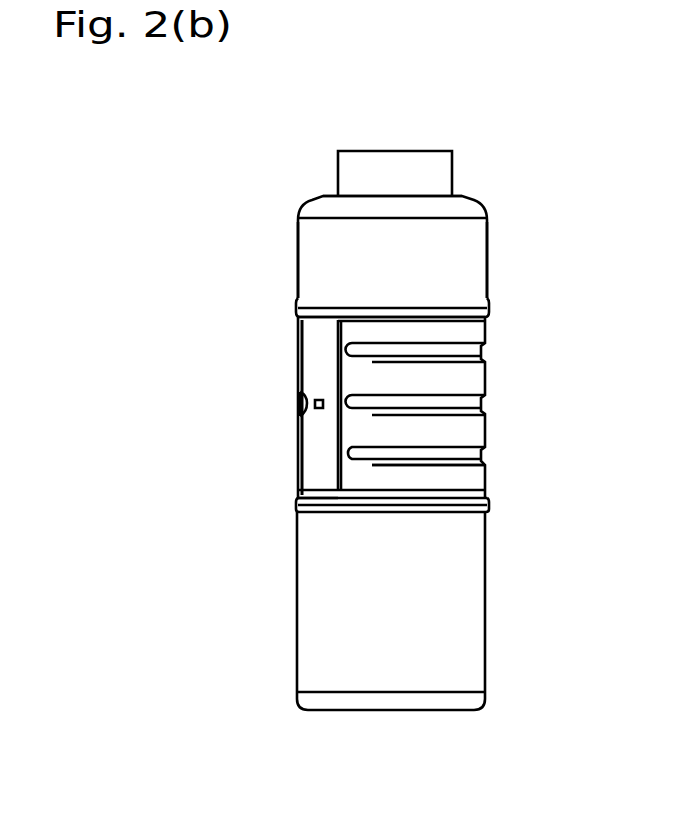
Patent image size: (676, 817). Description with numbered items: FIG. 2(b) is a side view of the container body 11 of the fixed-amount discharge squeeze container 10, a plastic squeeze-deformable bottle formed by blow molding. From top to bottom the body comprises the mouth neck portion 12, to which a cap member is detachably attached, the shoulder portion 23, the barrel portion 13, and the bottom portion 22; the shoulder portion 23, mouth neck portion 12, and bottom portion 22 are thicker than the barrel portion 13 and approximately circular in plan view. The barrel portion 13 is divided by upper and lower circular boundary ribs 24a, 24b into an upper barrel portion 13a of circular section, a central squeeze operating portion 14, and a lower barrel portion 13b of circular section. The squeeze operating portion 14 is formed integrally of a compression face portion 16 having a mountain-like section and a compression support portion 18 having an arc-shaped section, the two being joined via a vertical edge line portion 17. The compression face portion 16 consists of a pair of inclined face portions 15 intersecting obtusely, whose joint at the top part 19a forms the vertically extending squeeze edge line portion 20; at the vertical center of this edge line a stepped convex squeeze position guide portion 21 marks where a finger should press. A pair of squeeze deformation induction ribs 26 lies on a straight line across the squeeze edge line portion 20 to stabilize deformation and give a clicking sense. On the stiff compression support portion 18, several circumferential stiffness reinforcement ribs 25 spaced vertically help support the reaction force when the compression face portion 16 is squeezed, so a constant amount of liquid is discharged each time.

The fixed-amount discharge squeeze container 10 is at (286, 207).
The container body 11 is at (481, 198).
The mouth neck portion 12 is at (420, 175).
The barrel portion 13 is at (445, 380).
The upper barrel portion 13a is at (325, 262).
The lower barrel portion 13b is at (323, 610).
The squeeze operating portion 14 is at (322, 372).
The inclined face portions 15 is at (312, 448).
The compression face portion 16 is at (312, 425).
The edge line portion 17 is at (338, 334).
The compression support portion 18 is at (442, 435).
The top part 19a is at (297, 485).
The squeeze edge line portion 20 is at (273, 540).
The squeeze position guide portion 21 is at (300, 400).
The bottom portion 22 is at (443, 708).
The shoulder portion 23 is at (330, 208).
The upper circular boundary rib 24a is at (467, 315).
The lower circular boundary rib 24b is at (442, 503).
The stiffness reinforcement ribs 25 is at (457, 453).
The squeeze deformation induction ribs 26 is at (316, 400).